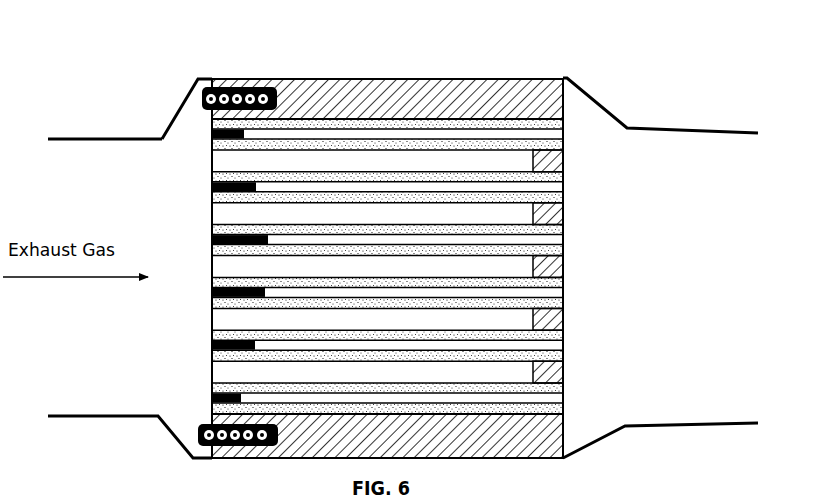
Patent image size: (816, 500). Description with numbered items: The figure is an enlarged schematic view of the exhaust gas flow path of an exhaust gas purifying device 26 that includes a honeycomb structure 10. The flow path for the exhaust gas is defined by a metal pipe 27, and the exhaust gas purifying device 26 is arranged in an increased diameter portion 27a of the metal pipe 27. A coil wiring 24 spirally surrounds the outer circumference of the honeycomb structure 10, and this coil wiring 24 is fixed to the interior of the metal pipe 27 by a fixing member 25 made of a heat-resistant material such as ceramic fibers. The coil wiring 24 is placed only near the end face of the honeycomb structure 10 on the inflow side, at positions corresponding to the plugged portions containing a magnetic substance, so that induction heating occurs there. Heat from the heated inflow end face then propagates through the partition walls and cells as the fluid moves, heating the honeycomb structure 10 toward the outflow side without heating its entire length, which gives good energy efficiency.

The honeycomb structure 10 is at (208, 282).
The coil wiring 24 is at (260, 79).
The fixing member 25 is at (442, 102).
The exhaust gas purifying device 26 is at (178, 236).
The metal pipe 27 is at (88, 138).
The increased diameter portion 27a is at (208, 78).